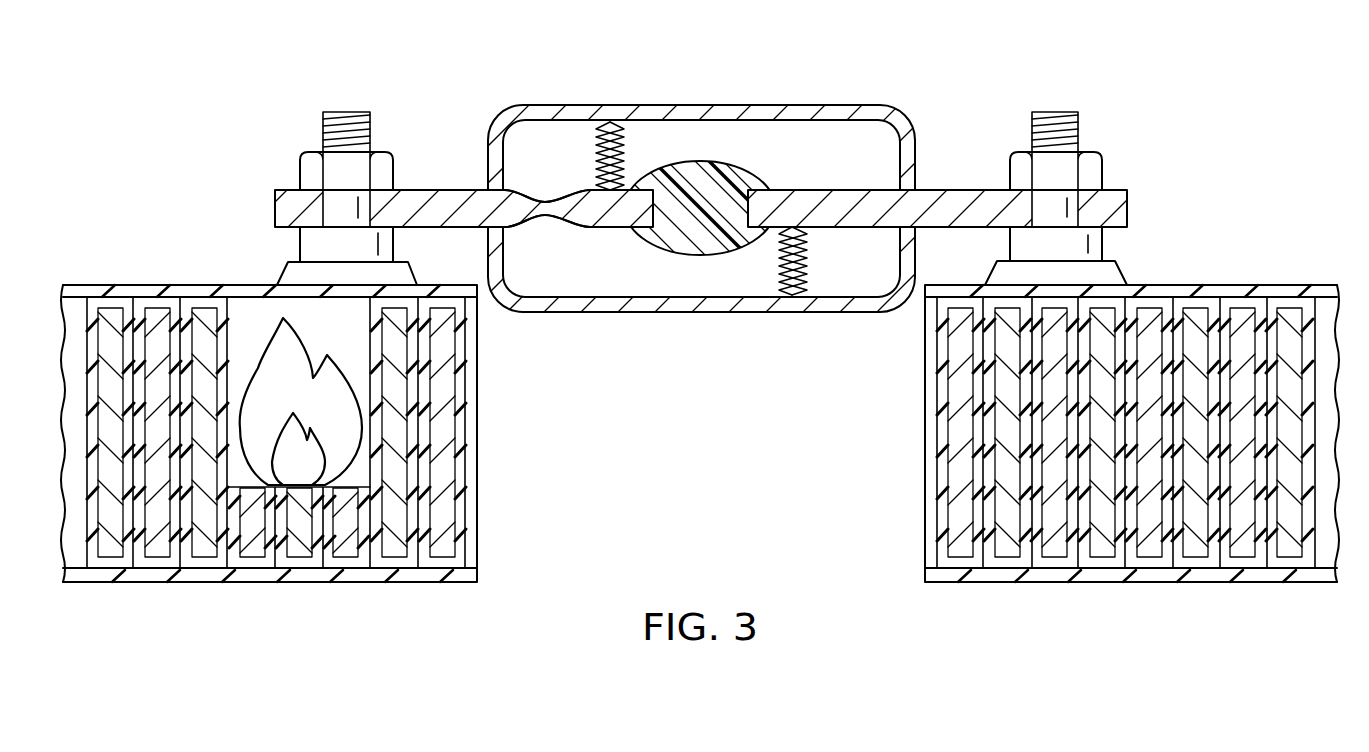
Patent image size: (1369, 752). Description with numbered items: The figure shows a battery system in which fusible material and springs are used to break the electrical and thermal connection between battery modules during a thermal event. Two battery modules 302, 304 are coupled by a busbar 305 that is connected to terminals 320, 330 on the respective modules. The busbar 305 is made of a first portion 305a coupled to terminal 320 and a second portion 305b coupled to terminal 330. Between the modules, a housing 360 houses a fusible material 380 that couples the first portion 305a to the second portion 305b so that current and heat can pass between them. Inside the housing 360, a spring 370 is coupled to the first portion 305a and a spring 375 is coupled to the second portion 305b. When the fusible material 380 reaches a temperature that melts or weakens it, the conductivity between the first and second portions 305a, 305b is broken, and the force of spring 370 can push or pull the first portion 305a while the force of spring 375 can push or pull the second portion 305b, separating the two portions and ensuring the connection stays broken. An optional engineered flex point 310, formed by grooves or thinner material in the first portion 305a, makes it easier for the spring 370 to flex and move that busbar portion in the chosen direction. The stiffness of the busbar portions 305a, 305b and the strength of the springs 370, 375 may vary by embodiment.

The battery module 302 is at (166, 250).
The battery module 304 is at (1236, 250).
The busbar 305 is at (693, 157).
The first portion 305a is at (458, 180).
The second portion 305b is at (950, 118).
The engineered flex point 310 is at (543, 198).
The terminal 320 is at (347, 110).
The terminal 330 is at (1055, 112).
The housing 360 is at (646, 85).
The spring 370 is at (628, 133).
The spring 375 is at (778, 265).
The fusible material 380 is at (777, 188).